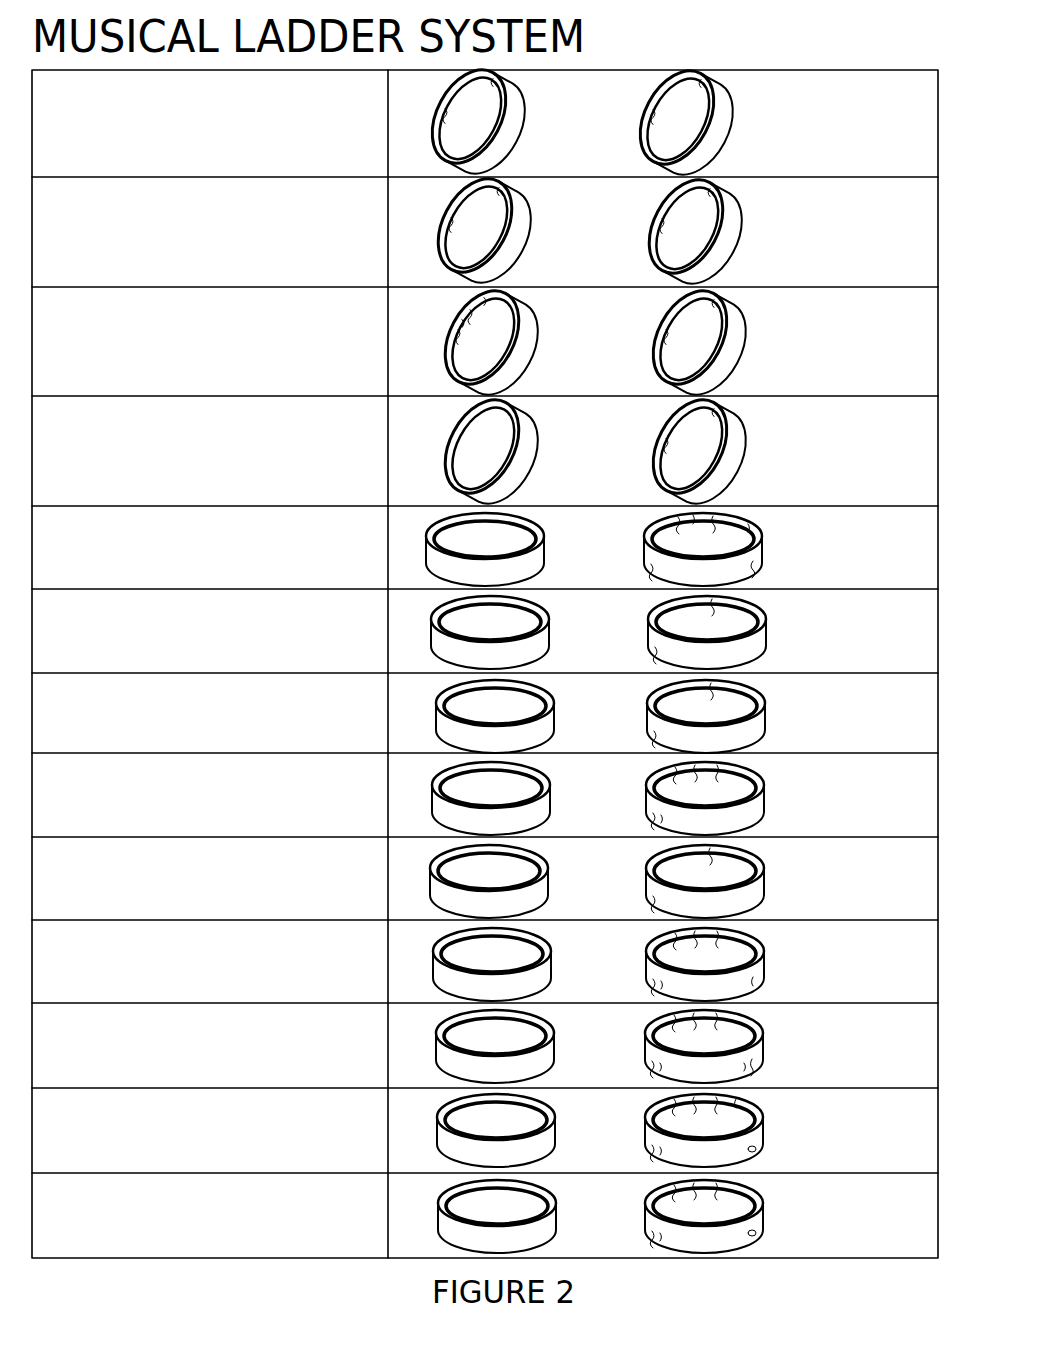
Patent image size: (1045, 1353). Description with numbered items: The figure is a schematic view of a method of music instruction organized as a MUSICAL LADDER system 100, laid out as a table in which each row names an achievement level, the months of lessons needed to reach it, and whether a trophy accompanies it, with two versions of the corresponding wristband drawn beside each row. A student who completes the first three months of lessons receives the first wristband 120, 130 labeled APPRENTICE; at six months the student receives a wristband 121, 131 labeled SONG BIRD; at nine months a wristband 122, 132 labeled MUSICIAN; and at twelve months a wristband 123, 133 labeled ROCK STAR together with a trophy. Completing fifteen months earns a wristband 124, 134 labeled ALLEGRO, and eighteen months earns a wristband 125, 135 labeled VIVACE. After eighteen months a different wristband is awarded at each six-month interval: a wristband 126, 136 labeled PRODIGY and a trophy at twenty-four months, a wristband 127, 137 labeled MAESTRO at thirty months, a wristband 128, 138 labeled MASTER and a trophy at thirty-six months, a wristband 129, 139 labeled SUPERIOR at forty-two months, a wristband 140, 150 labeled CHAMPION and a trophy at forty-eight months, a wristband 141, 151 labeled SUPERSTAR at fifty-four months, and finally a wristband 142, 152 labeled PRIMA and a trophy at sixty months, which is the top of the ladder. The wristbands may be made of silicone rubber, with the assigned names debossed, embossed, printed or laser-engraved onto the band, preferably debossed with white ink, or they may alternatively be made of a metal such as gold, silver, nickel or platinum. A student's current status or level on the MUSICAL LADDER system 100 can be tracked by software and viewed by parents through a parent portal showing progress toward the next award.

The MUSICAL LADDER system 100 is at (797, 61).
The wristband 120 is at (555, 1211).
The wristband 121 is at (554, 1125).
The wristband 122 is at (553, 1041).
The wristband 123 is at (550, 959).
The wristband 124 is at (546, 876).
The wristband 125 is at (548, 793).
The wristband 126 is at (552, 711).
The wristband 127 is at (547, 627).
The wristband 128 is at (542, 544).
The wristband 129 is at (533, 431).
The wristband 130 is at (761, 1211).
The wristband 131 is at (761, 1125).
The wristband 132 is at (761, 1041).
The wristband 133 is at (762, 959).
The wristband 134 is at (762, 876).
The wristband 135 is at (762, 793).
The wristband 136 is at (764, 710).
The wristband 137 is at (764, 627).
The wristband 138 is at (760, 544).
The wristband 139 is at (741, 431).
The wristband 140 is at (533, 320).
The wristband 141 is at (526, 210).
The wristband 142 is at (520, 103).
The wristband 150 is at (741, 320).
The wristband 151 is at (737, 210).
The wristband 152 is at (728, 103).